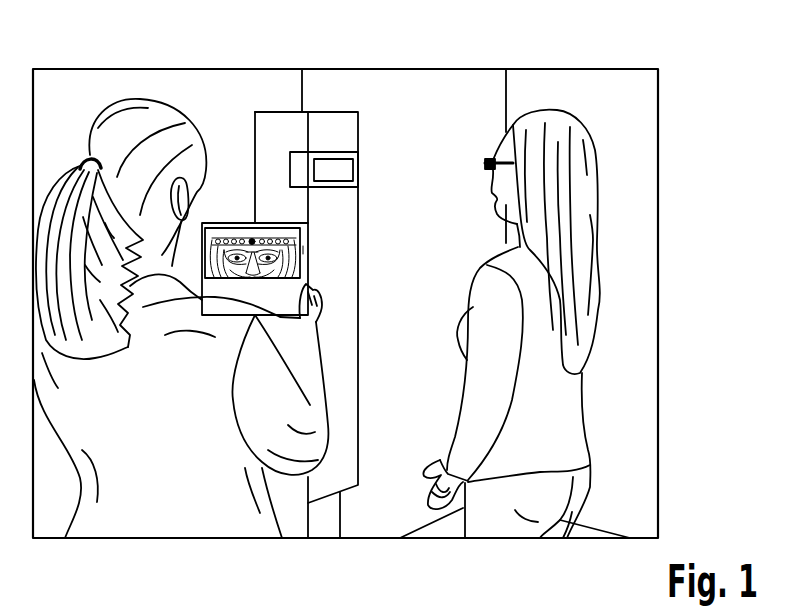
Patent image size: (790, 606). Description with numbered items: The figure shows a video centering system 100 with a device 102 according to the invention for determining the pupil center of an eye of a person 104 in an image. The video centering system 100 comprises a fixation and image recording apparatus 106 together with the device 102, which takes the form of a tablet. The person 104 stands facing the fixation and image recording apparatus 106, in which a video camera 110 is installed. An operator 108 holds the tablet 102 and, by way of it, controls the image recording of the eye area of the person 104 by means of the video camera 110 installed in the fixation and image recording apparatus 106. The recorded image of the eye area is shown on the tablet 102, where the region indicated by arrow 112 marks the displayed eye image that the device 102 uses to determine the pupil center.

The video centering system 100 is at (372, 96).
The device 102 is at (232, 214).
The person 104 is at (555, 125).
The fixation and image recording apparatus 106 is at (331, 118).
The operator 108 is at (130, 101).
The video camera 110 is at (343, 170).
The displayed face image indicator 112 is at (320, 250).